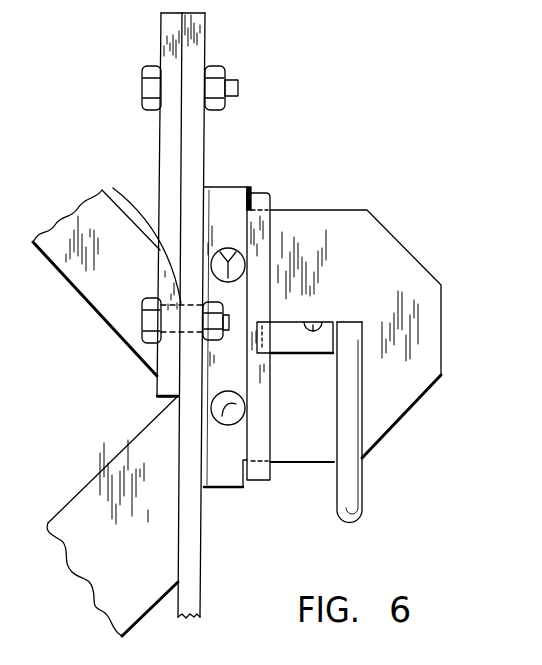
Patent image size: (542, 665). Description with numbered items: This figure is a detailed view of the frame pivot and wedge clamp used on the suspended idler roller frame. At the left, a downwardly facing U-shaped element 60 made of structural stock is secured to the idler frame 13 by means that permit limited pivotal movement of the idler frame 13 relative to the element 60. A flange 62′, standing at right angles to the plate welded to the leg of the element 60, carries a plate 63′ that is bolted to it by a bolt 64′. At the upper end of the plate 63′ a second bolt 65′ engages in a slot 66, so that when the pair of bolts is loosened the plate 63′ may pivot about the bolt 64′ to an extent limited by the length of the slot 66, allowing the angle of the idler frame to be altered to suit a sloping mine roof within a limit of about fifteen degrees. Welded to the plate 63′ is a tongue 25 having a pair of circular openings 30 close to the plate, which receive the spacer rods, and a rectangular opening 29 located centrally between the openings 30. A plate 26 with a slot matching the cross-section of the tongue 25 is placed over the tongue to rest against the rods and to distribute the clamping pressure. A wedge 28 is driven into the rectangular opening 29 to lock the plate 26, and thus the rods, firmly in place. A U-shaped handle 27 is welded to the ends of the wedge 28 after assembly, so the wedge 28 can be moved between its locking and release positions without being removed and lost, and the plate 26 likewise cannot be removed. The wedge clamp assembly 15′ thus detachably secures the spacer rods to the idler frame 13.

The idler frame 13 is at (130, 488).
The latch assembly 15′ is at (303, 200).
The tongue 25 is at (370, 242).
The plate 26 is at (267, 197).
The U-shaped handle 27 is at (345, 502).
The wedge 28 is at (275, 342).
The rectangular opening 29 is at (330, 321).
The circular openings 30 is at (222, 248).
The U-shaped element 60 is at (110, 292).
The flange 62′ is at (168, 150).
The plate 63′ is at (192, 157).
The bolt 64′ is at (140, 318).
The bolt 65′ is at (218, 68).
The slot 66 is at (133, 232).